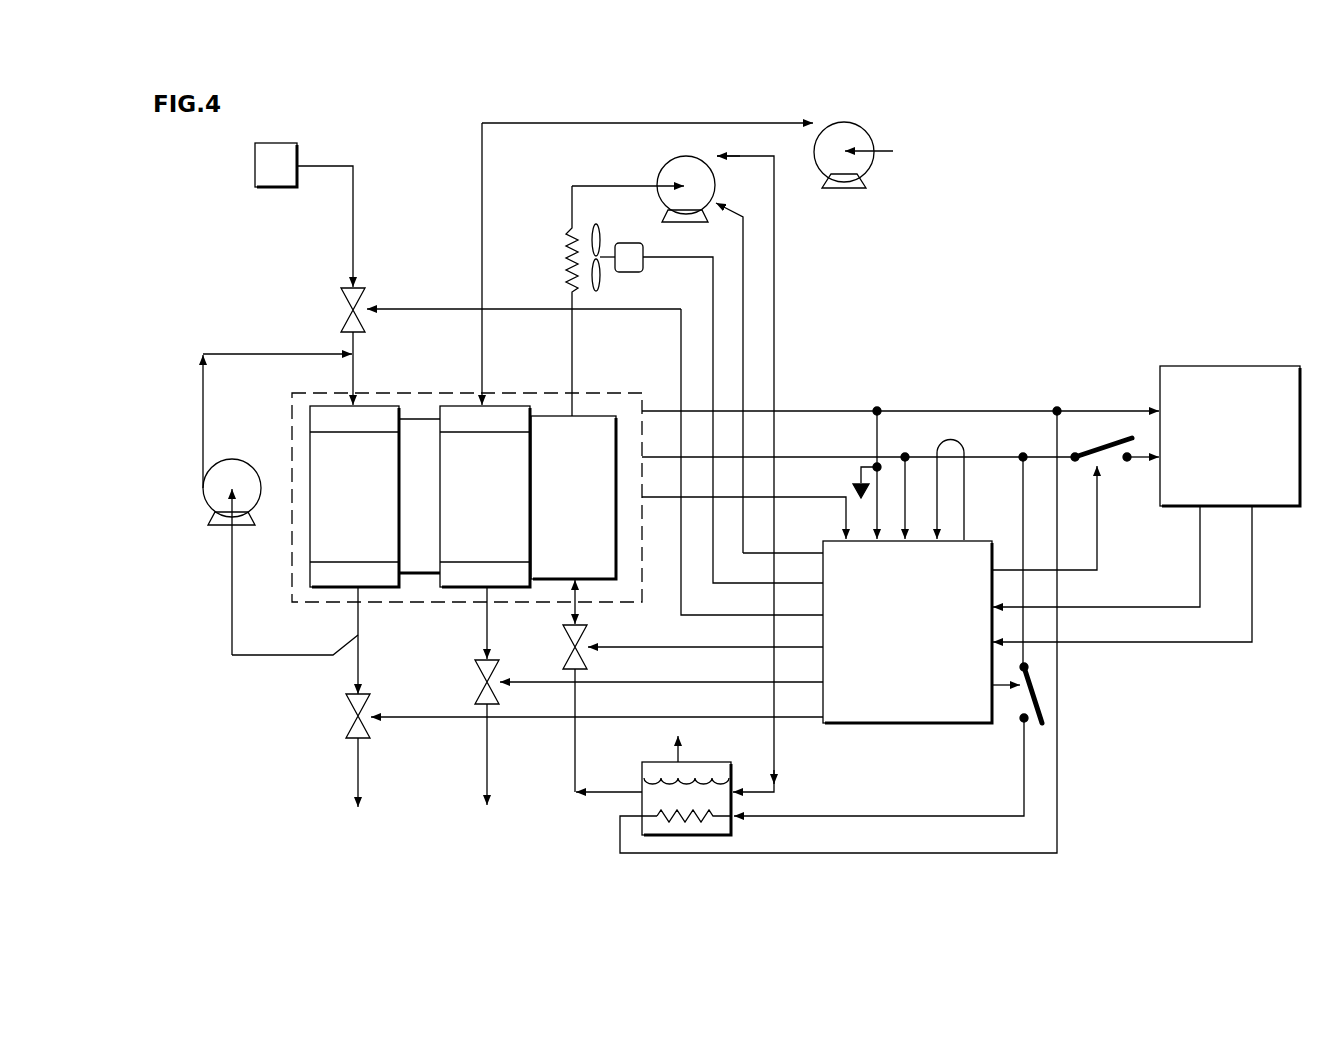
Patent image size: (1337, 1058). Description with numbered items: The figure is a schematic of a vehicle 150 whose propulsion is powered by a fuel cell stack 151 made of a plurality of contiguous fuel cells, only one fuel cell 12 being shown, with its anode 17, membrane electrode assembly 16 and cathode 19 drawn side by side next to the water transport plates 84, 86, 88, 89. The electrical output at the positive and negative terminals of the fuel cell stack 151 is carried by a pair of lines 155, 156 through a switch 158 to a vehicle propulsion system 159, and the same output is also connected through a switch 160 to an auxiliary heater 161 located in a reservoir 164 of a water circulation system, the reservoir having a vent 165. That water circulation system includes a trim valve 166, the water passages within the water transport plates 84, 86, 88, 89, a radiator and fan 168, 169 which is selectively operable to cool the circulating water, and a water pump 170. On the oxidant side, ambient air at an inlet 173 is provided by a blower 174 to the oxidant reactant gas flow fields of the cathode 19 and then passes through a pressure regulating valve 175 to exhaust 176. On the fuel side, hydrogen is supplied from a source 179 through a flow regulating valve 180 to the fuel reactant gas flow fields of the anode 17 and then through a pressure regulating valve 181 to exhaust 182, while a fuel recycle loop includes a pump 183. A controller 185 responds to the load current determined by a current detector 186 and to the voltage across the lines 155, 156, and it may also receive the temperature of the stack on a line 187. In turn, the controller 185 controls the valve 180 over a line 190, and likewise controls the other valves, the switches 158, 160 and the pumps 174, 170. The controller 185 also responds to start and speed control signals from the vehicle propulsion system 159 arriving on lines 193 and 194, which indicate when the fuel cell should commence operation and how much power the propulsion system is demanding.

The fuel cell 12 is at (504, 402).
The membrane electrode assembly 16 is at (431, 524).
The anode 17 is at (368, 524).
The cathode 19 is at (493, 524).
The water transport plate 84 is at (573, 497).
The water transport plate 86 is at (573, 497).
The water transport plate 88 is at (573, 497).
The water transport plate 89 is at (601, 552).
The vehicle 150 is at (1011, 201).
The fuel cell stack 151 is at (381, 389).
The line 155 is at (832, 410).
The line 156 is at (803, 456).
The switch 158 is at (1108, 461).
The vehicle propulsion system 159 is at (1243, 481).
The switch 160 is at (1037, 693).
The auxiliary heater 161 is at (660, 815).
The reservoir 164 is at (710, 777).
The vent 165 is at (675, 753).
The trim valve 166 is at (565, 636).
The radiator 168 is at (562, 262).
The fan 169 is at (632, 268).
The water pump 170 is at (663, 164).
The inlet 173 is at (877, 150).
The blower 174 is at (843, 122).
The pressure regulating valve 175 is at (476, 674).
The exhaust 176 is at (482, 805).
The source 179 is at (270, 142).
The flow regulating valve 180 is at (340, 310).
The pressure regulating valve 181 is at (347, 708).
The exhaust 182 is at (353, 805).
The pump 183 is at (215, 498).
The controller 185 is at (919, 663).
The current detector 186 is at (965, 470).
The line 187 is at (785, 496).
The line 190 is at (395, 309).
The line 193 is at (1253, 547).
The line 194 is at (1197, 547).